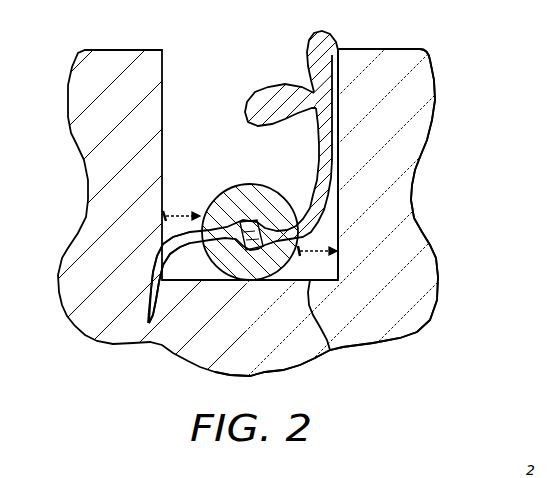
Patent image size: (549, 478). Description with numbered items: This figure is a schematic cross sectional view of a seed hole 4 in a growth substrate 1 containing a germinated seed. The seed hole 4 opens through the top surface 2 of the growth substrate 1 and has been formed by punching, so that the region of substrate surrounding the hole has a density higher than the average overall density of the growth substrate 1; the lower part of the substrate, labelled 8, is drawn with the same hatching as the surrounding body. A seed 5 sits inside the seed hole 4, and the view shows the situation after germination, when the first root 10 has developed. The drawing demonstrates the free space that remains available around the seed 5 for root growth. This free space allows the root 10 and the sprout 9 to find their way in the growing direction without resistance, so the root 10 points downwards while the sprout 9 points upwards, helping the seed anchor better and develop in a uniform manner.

The growth substrate 1 is at (76, 137).
The top surface 2 is at (122, 49).
The seed hole 4 is at (250, 60).
The seed 5 is at (233, 187).
The base part 8 is at (330, 352).
The sprout 9 is at (340, 146).
The first root 10 is at (160, 247).